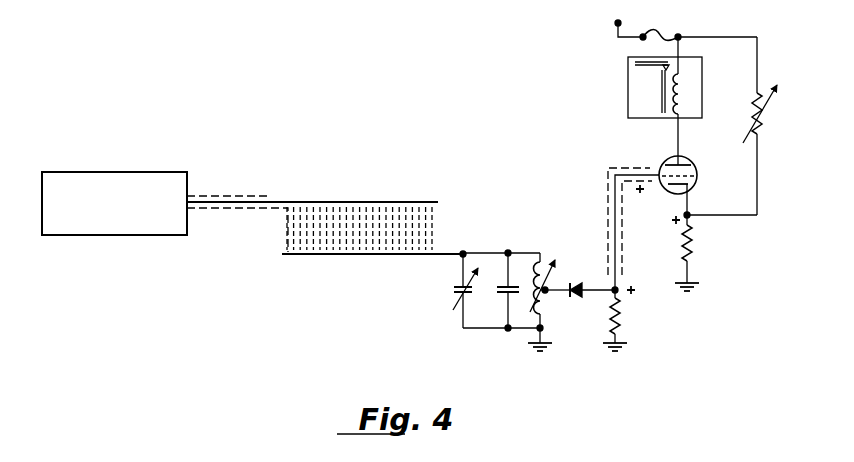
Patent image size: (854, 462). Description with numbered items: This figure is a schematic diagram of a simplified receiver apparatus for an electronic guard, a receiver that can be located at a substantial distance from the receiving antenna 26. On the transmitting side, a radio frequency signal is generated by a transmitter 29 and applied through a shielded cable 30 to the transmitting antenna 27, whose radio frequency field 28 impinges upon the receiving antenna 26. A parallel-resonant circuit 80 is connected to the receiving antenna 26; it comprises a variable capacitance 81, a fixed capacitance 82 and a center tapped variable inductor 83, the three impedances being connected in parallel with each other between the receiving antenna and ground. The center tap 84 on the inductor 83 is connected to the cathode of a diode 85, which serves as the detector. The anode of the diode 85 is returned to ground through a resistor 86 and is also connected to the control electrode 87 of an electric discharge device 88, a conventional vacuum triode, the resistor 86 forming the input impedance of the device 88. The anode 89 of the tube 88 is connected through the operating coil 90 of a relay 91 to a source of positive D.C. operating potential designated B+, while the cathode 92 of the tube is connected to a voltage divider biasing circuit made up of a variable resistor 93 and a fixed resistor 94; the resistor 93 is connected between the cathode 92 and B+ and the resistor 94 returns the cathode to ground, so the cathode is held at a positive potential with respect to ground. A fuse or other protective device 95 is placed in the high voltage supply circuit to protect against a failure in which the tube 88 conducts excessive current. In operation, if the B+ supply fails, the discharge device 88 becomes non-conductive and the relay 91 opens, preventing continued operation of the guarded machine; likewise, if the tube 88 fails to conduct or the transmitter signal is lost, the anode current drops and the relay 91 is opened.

The receiving antenna 26 is at (335, 256).
The transmitting antenna 27 is at (342, 201).
The radio frequency field 28 is at (368, 228).
The transmitter 29 is at (110, 170).
The shielded cable 30 is at (215, 193).
The parallel-resonant circuit 80 is at (483, 305).
The variable capacitance 81 is at (463, 290).
The fixed capacitance 82 is at (512, 285).
The center tapped variable inductor 83 is at (545, 313).
The center tap 84 is at (548, 291).
The diode 85 is at (580, 282).
The resistor 86 is at (618, 320).
The control electrode 87 is at (690, 180).
The electric discharge device 88 is at (660, 164).
The anode 89 is at (686, 158).
The operating coil 90 is at (683, 75).
The relay 91 is at (628, 88).
The cathode 92 is at (678, 186).
The variable resistor 93 is at (752, 103).
The fixed resistor 94 is at (690, 247).
The protective device 95 is at (655, 32).